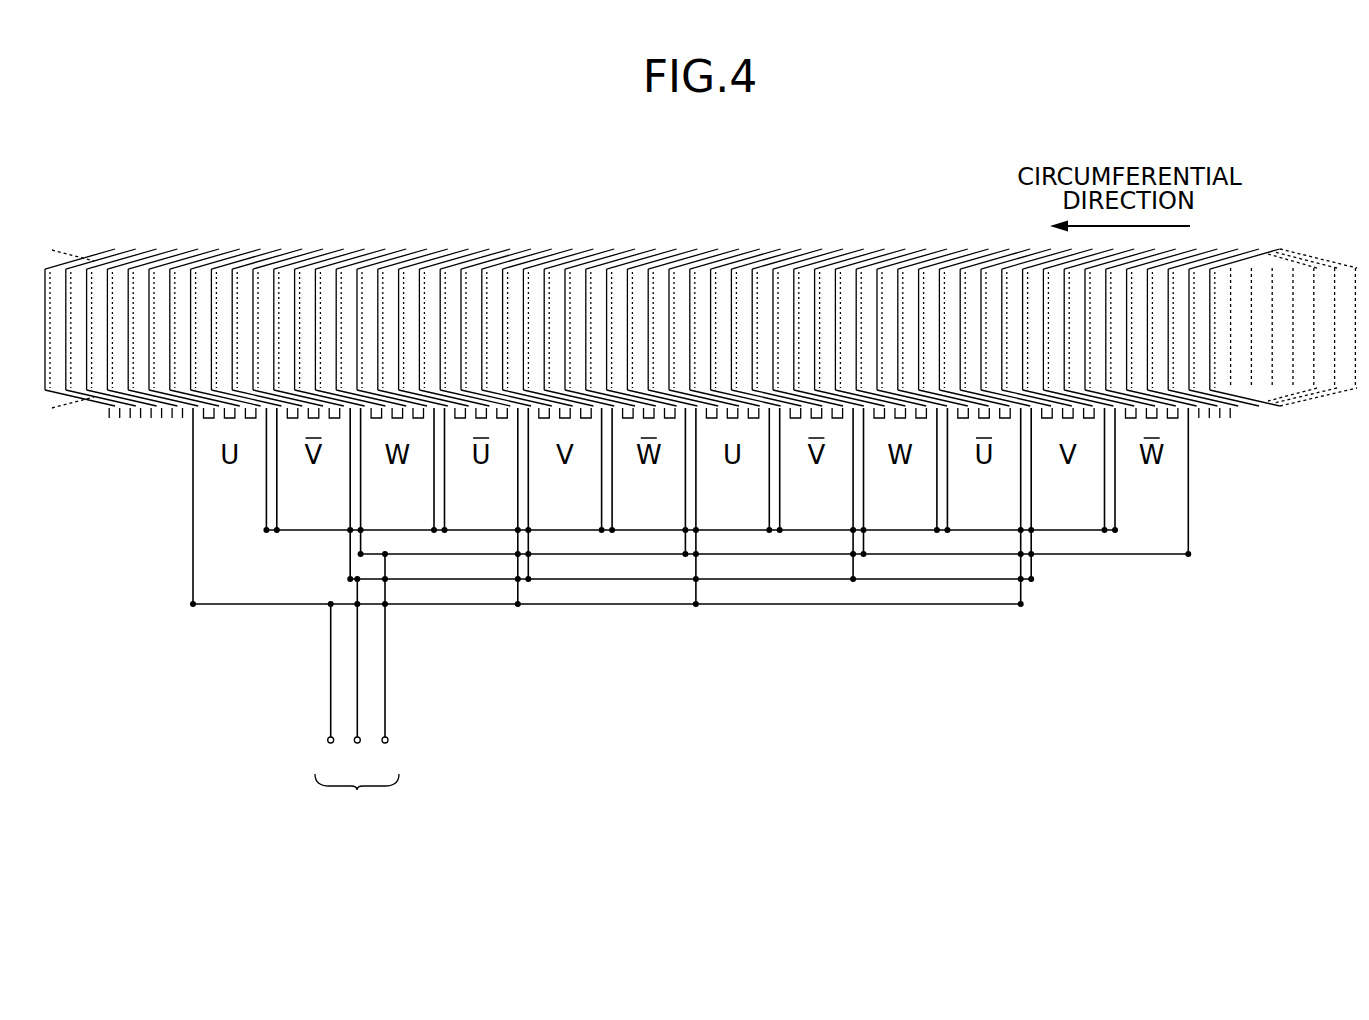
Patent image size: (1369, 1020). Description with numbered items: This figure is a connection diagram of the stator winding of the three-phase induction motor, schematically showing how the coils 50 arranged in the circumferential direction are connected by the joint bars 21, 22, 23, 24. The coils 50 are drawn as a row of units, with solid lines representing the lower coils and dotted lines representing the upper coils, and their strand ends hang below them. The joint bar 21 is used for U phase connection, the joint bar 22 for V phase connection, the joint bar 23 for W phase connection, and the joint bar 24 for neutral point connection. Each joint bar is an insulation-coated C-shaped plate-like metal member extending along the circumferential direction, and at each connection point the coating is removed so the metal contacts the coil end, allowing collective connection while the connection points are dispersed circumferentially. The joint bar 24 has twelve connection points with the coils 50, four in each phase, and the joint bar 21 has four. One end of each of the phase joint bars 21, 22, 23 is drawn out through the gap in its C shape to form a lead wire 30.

The coil 50 is at (1277, 250).
The joint bar 21 is at (877, 605).
The joint bar 22 is at (972, 579).
The joint bar 23 is at (942, 554).
The joint bar 24 is at (910, 530).
The lead wire 30 is at (357, 689).